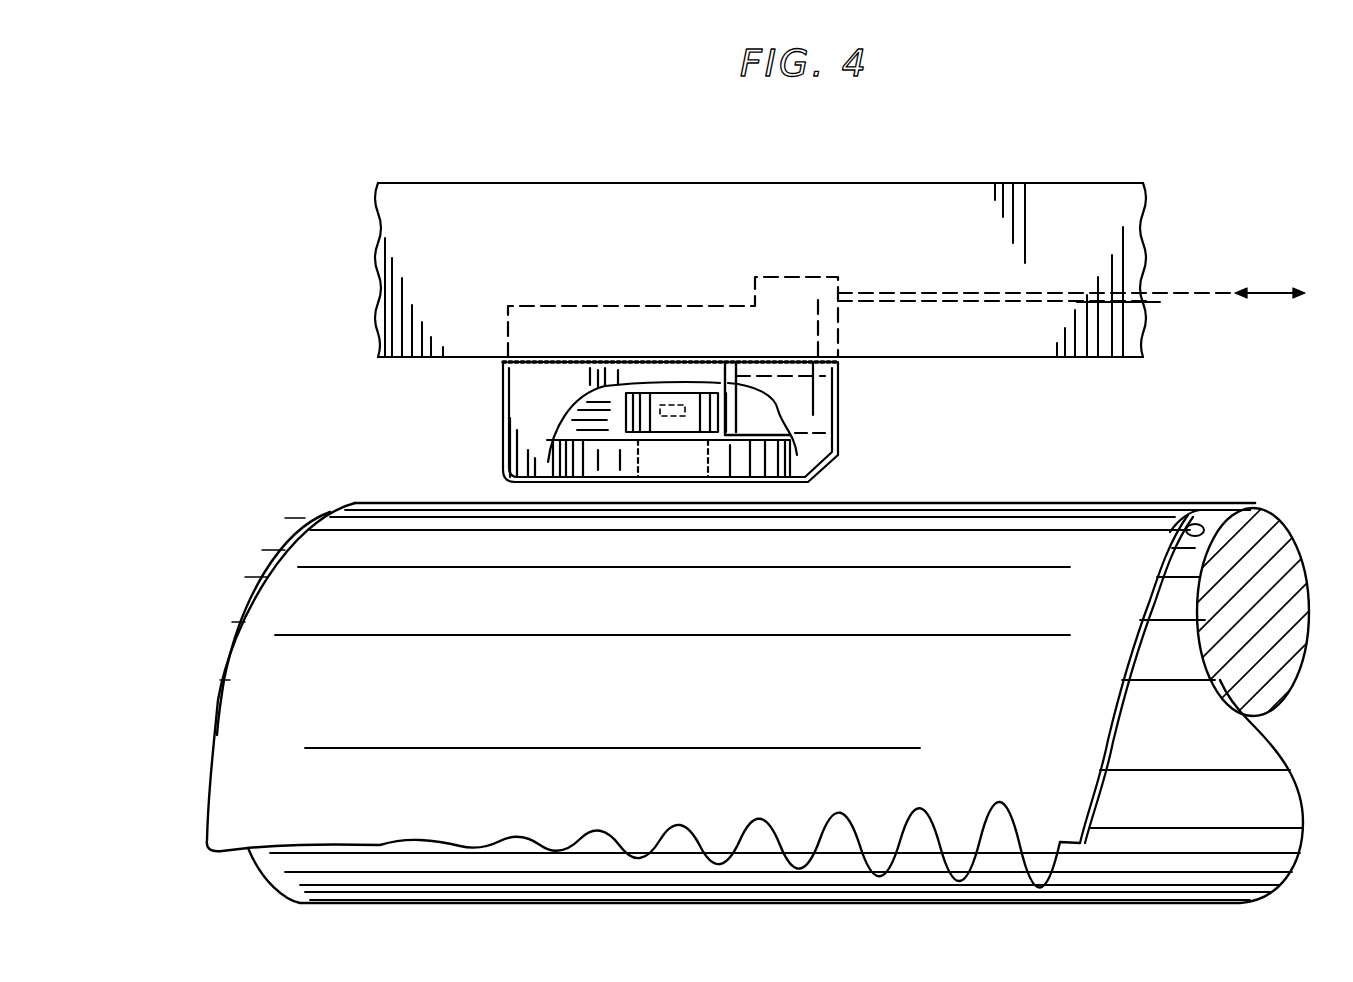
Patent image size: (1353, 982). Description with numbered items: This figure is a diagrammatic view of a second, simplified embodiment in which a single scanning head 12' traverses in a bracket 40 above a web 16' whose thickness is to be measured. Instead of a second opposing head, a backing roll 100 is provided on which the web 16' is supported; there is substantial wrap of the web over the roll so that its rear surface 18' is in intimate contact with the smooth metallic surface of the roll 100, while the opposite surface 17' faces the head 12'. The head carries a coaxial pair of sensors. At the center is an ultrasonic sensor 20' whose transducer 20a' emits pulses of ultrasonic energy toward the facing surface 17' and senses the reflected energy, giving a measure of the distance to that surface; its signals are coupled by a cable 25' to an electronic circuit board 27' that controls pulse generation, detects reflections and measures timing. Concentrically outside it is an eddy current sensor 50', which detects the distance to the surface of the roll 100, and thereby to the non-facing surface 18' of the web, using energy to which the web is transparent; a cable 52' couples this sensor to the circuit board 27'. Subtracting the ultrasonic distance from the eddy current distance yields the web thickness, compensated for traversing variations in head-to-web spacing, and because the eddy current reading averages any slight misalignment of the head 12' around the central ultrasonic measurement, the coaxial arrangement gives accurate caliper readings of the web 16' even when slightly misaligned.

The bracket 40 is at (605, 257).
The scanning head 12' is at (556, 422).
The transducer 20a' is at (670, 390).
The ultrasonic sensor 20' is at (676, 375).
The cable 25' is at (754, 376).
The electronic circuit board 27' is at (824, 397).
The eddy current sensor 50' is at (550, 456).
The cable 52' is at (786, 460).
The surface 17' is at (805, 470).
The web 16' is at (749, 661).
The rear surface 18' is at (1235, 640).
The backing roll 100 is at (1218, 751).